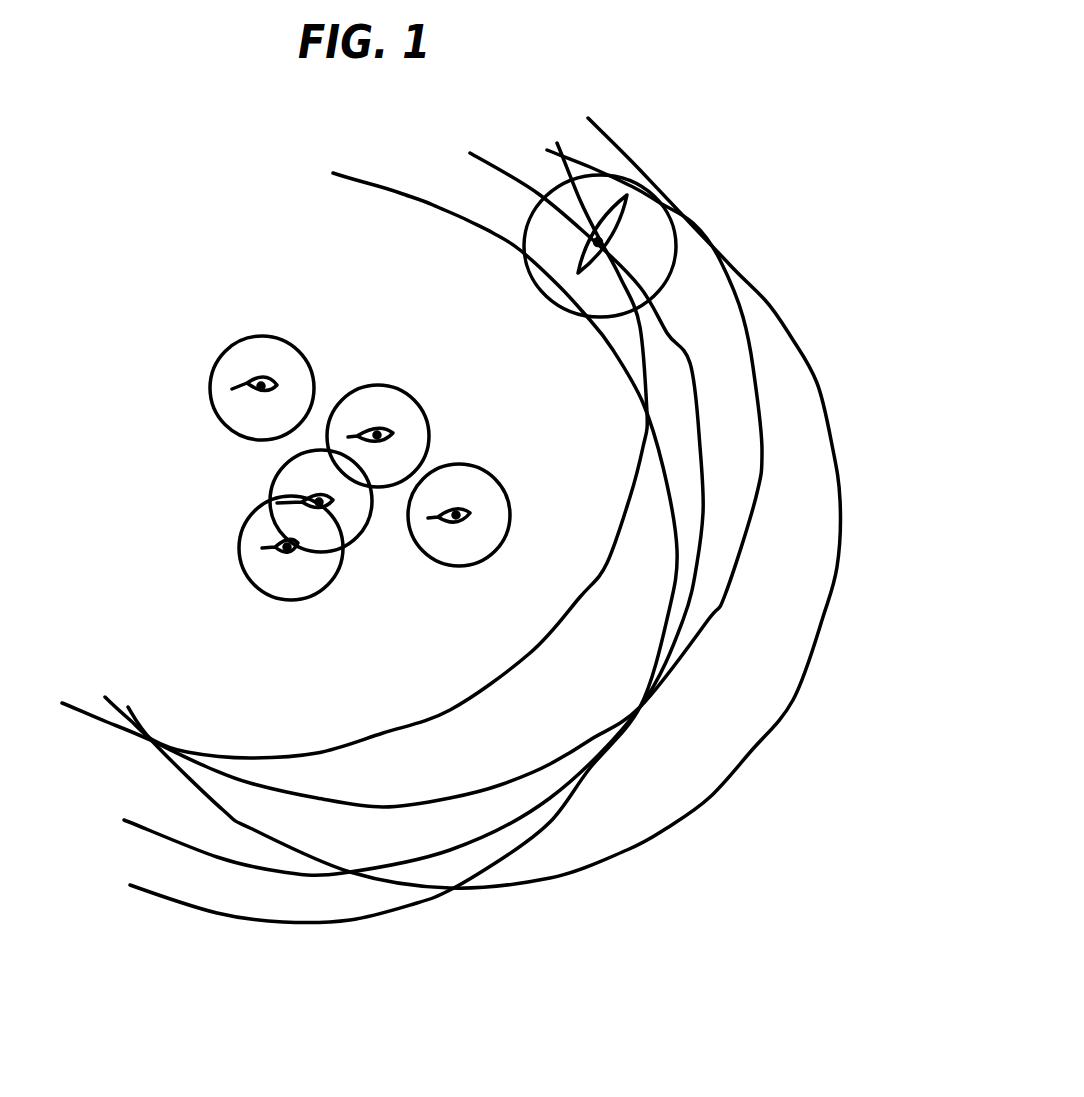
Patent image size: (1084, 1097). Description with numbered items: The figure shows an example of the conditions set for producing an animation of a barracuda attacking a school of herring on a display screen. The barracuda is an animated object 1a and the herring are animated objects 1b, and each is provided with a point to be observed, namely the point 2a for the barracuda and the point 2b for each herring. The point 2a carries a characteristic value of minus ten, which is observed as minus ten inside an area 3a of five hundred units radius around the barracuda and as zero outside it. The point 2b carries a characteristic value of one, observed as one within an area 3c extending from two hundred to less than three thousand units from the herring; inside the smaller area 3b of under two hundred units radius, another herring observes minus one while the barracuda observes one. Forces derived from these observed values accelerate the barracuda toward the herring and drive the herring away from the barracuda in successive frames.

The animated object 1a is at (630, 197).
The point to be observed 2a is at (600, 242).
The area 3a is at (653, 270).
The animated objects 1b is at (450, 508).
The point to be observed 2b is at (460, 512).
The area 3b is at (440, 548).
The area 3c is at (748, 722).